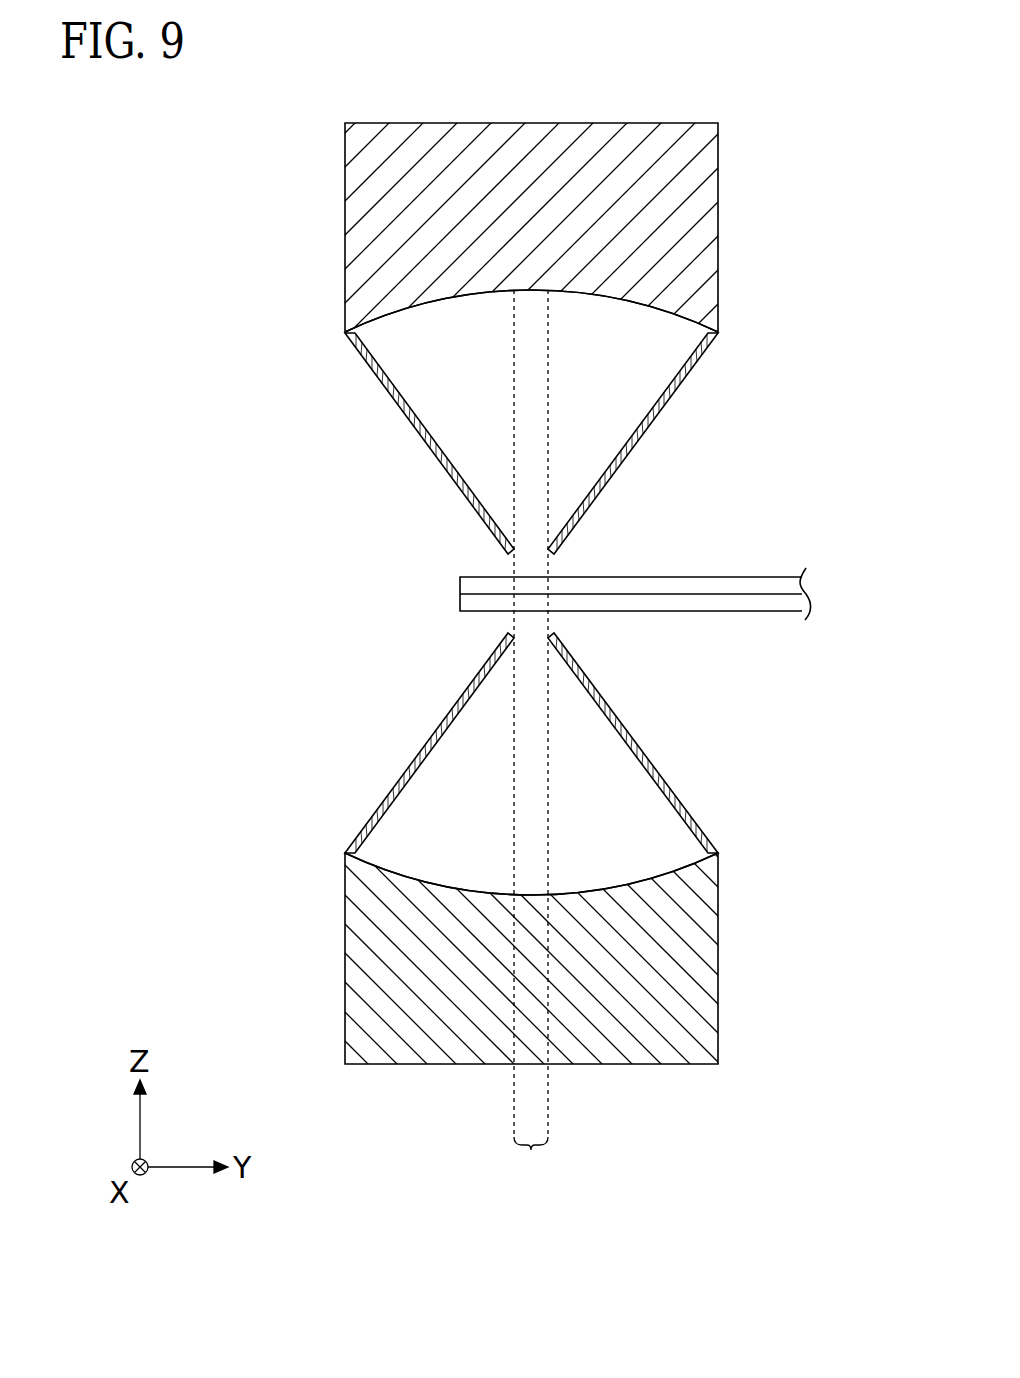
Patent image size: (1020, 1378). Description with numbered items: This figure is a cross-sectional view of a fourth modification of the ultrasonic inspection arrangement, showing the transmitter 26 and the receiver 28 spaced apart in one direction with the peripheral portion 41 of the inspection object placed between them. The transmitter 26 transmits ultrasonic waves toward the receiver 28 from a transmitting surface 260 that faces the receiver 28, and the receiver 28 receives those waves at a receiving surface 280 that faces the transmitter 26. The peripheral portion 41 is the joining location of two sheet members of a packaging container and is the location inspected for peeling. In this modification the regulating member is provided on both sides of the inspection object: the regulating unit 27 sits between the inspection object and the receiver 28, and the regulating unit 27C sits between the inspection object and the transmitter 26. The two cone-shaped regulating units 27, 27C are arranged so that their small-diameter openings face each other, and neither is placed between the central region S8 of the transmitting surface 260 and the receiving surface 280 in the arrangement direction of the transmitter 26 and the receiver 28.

The transmitter 26 is at (345, 243).
The transmitting surface 260 is at (458, 293).
The regulating unit 27C is at (420, 446).
The peripheral portion 41 is at (665, 577).
The regulating unit 27 is at (450, 703).
The receiving surface 280 is at (443, 888).
The receiver 28 is at (345, 973).
The central region S8 is at (531, 738).